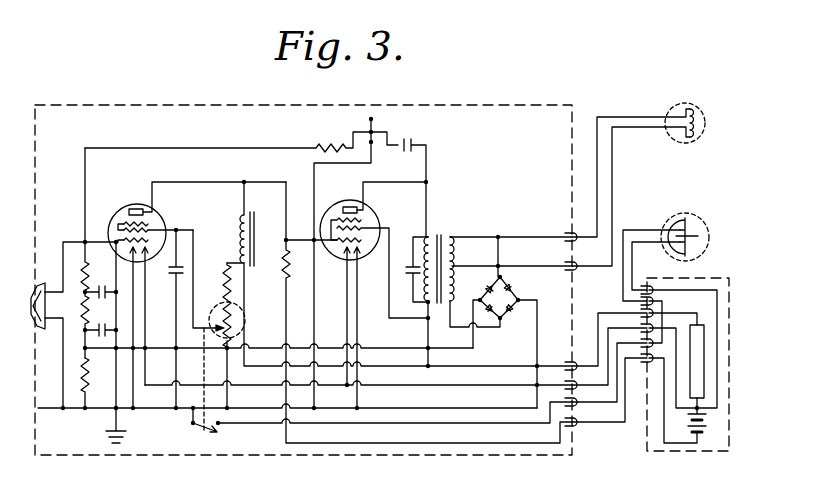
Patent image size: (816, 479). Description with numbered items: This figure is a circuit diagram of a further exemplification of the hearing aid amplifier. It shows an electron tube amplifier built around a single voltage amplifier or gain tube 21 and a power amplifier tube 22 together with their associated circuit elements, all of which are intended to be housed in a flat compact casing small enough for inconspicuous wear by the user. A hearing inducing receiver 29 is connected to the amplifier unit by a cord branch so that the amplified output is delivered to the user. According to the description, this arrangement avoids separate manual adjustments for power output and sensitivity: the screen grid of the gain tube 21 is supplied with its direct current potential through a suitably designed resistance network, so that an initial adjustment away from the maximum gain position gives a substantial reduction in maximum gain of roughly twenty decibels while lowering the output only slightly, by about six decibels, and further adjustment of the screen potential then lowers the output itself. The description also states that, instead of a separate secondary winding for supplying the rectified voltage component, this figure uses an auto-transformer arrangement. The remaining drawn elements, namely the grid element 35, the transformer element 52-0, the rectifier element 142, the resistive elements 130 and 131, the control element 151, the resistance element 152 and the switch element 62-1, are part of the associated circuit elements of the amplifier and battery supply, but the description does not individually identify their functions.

The voltage amplifier tube 21 is at (115, 215).
The power amplifier tube 22 is at (357, 295).
The control grid of tube 22 35 is at (354, 244).
The hearing inducing receiver 29 is at (704, 127).
The power transformer 52-0 is at (442, 236).
The bridge rectifier 142 is at (512, 291).
The grid leak resistor 130 is at (87, 368).
The resistance-capacitance filter resistors 131 is at (88, 262).
The volume control knob (potentiometer tap) 151 is at (220, 312).
The potentiometer resistance element 152 is at (222, 286).
The power switch 62-1 is at (205, 374).